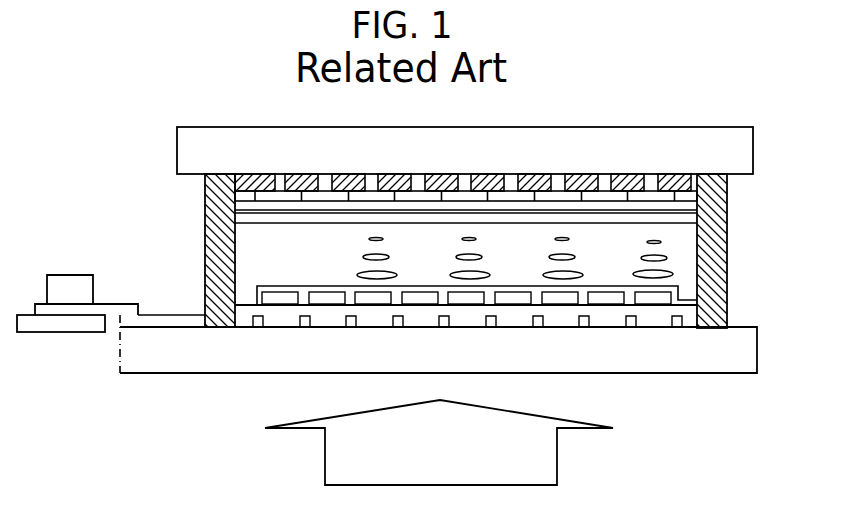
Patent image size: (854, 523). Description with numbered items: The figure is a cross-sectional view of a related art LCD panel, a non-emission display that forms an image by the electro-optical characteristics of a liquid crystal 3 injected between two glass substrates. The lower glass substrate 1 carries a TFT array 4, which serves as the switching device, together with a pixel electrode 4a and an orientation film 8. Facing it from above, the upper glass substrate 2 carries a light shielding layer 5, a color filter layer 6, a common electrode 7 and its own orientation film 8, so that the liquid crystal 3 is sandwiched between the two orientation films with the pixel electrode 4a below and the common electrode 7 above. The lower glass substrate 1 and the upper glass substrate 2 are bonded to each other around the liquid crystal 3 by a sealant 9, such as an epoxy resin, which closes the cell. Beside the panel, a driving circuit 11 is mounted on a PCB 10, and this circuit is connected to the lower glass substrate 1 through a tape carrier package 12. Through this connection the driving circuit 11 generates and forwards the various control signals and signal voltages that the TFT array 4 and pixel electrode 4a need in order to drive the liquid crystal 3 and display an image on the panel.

The lower glass substrate 1 is at (757, 347).
The upper glass substrate 2 is at (750, 152).
The liquid crystal 3 is at (672, 273).
The TFT array 4 is at (680, 320).
The pixel electrode 4a is at (650, 303).
The light shielding layer 5 is at (688, 182).
The color filter layer 6 is at (667, 199).
The common electrode 7 is at (242, 207).
The orientation film 8 is at (205, 243).
The sealant 9 is at (205, 283).
The PCB 10 is at (43, 336).
The driving circuit 11 is at (78, 282).
The tape carrier package 12 is at (112, 310).